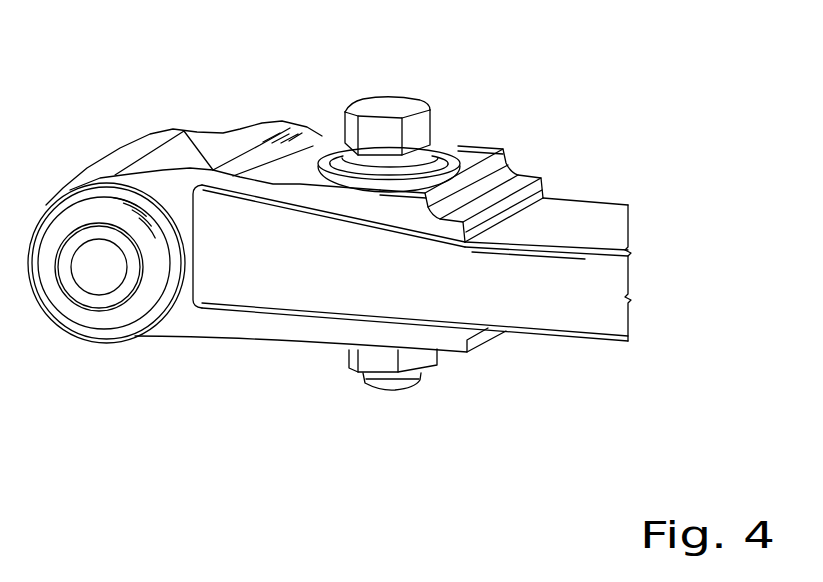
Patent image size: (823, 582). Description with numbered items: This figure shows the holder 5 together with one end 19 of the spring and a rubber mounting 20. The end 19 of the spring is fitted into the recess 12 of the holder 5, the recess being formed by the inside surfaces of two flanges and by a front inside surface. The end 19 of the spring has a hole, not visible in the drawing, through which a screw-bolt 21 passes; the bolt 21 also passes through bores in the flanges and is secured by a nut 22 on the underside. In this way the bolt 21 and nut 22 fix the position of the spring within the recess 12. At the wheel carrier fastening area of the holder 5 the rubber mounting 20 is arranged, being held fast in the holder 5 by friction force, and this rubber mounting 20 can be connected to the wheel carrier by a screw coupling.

The holder 5 is at (288, 78).
The recess 12 is at (430, 285).
The end of the spring 19 is at (293, 265).
The rubber mounting 20 is at (127, 292).
The screw-bolt 21 is at (417, 132).
The nut 22 is at (390, 358).